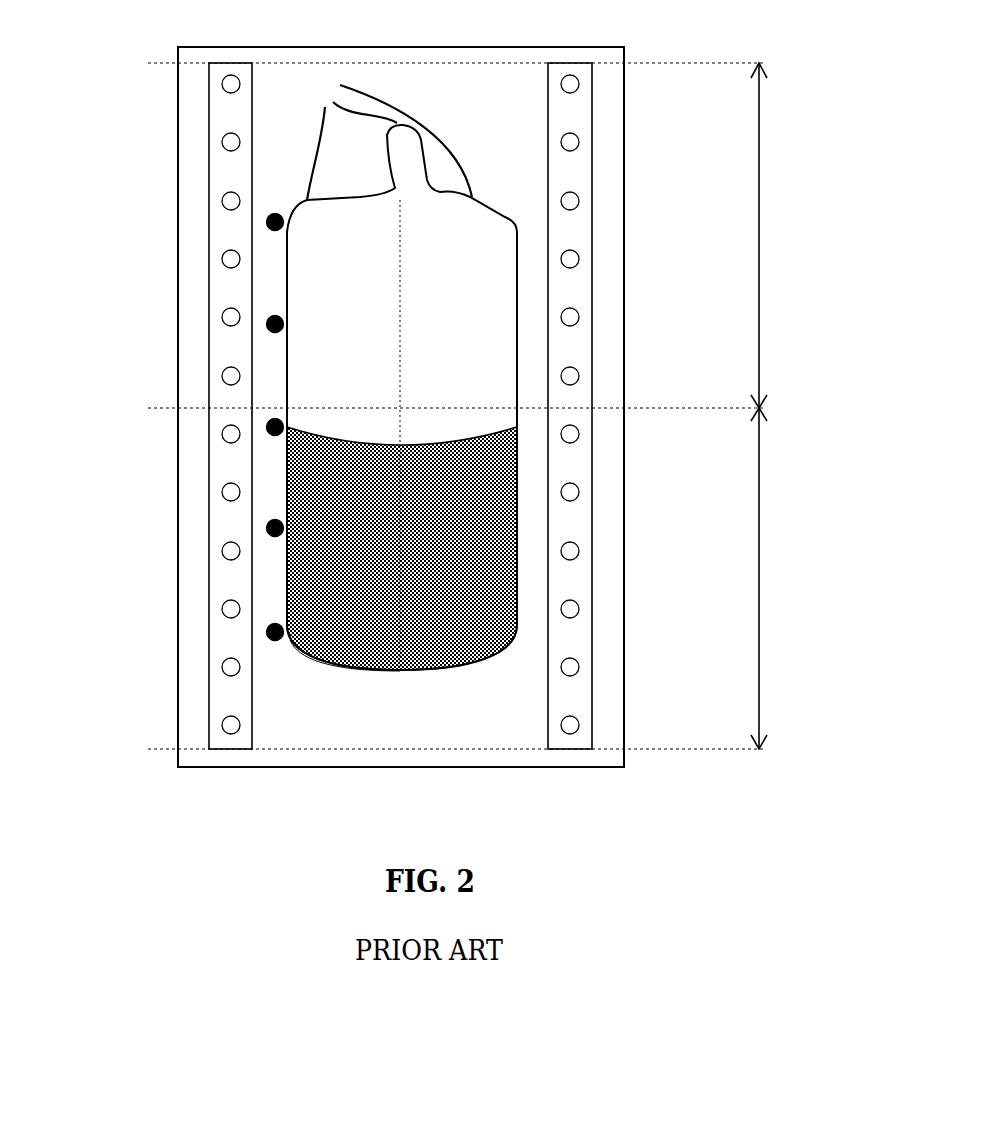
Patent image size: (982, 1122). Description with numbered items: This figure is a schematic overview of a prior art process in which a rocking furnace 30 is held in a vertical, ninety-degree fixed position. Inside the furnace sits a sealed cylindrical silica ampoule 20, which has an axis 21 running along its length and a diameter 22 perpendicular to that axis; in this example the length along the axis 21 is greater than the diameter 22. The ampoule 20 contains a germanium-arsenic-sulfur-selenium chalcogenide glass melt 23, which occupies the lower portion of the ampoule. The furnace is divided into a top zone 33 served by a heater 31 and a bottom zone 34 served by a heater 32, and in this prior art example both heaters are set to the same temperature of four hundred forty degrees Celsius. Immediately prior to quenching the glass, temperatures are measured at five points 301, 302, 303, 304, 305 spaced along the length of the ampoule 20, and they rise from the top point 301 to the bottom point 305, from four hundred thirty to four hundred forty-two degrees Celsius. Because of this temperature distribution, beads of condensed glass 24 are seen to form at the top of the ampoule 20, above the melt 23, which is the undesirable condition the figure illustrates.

The ampoule 20 is at (517, 343).
The axis 21 is at (400, 318).
The diameter 22 is at (478, 458).
The glass melt 23 is at (450, 644).
The beads of condensed glass 24 is at (381, 136).
The rocking furnace 30 is at (624, 290).
The heater 31 is at (567, 228).
The heater 32 is at (575, 627).
The top zone 33 is at (777, 235).
The bottom zone 34 is at (776, 578).
The temperature measurement point 301 is at (275, 222).
The temperature measurement point 302 is at (275, 320).
The temperature measurement point 303 is at (275, 427).
The temperature measurement point 304 is at (275, 528).
The temperature measurement point 305 is at (275, 632).